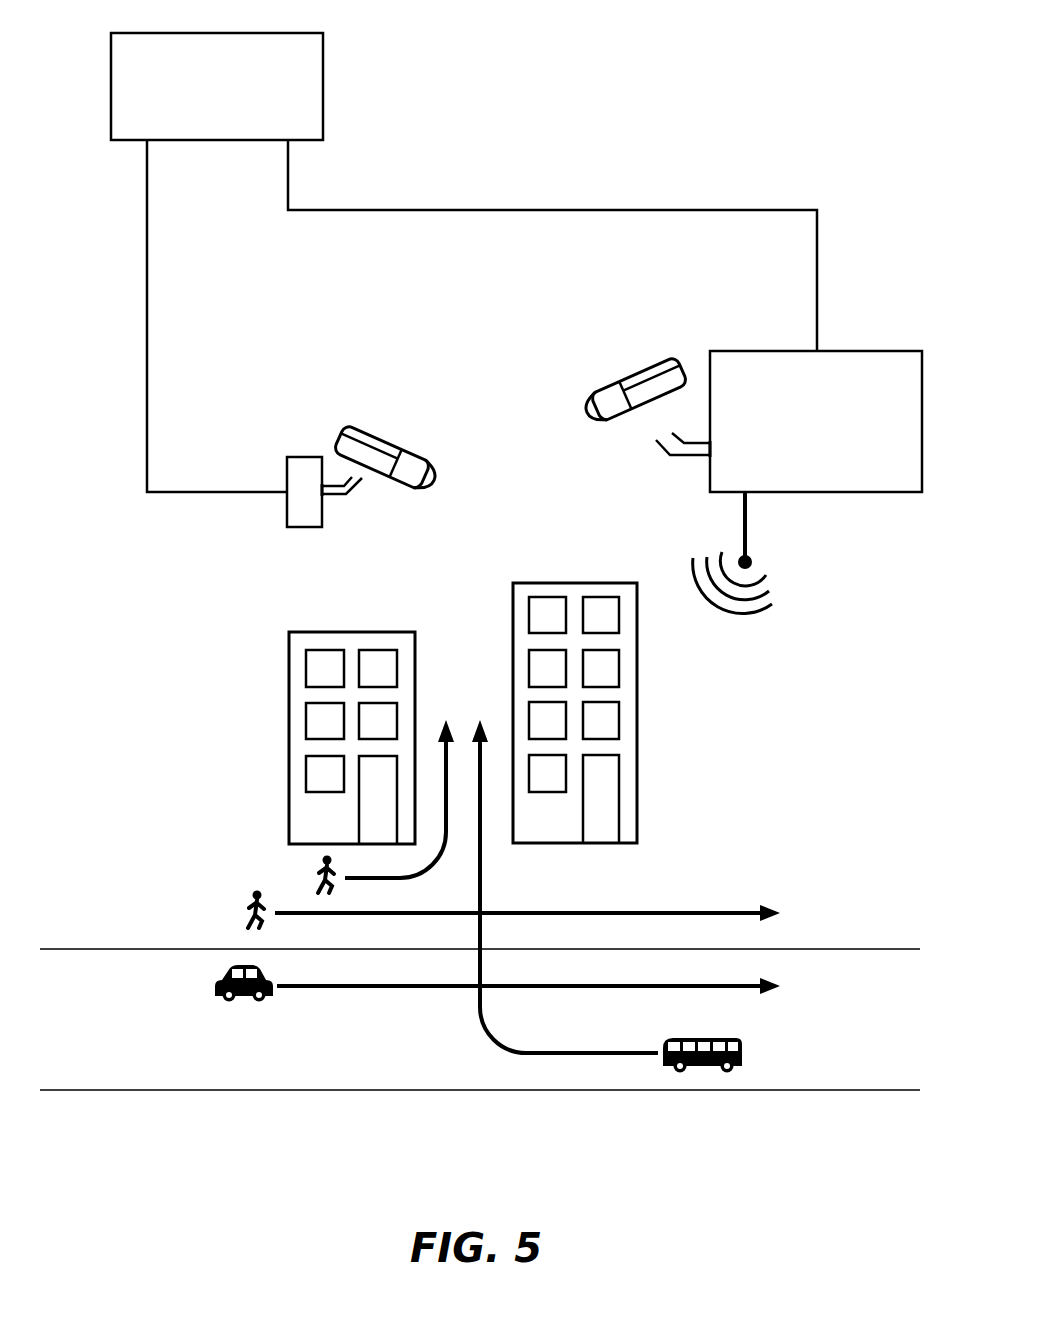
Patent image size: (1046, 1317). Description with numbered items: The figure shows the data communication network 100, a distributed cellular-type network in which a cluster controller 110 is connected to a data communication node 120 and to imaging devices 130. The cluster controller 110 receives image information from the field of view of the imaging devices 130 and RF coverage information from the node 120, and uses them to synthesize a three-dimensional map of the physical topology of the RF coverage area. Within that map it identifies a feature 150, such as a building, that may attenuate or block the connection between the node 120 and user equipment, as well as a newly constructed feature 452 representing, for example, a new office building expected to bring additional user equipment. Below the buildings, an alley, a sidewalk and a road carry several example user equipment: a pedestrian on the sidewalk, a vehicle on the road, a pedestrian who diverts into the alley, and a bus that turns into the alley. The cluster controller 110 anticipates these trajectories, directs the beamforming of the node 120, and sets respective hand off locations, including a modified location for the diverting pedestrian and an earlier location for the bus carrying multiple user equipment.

The data communication network 100 is at (464, 619).
The cluster controller 110 is at (125, 33).
The data communication node 120 is at (724, 352).
The imaging device 130 is at (390, 441).
The feature 150 is at (304, 632).
The new feature 452 is at (637, 583).